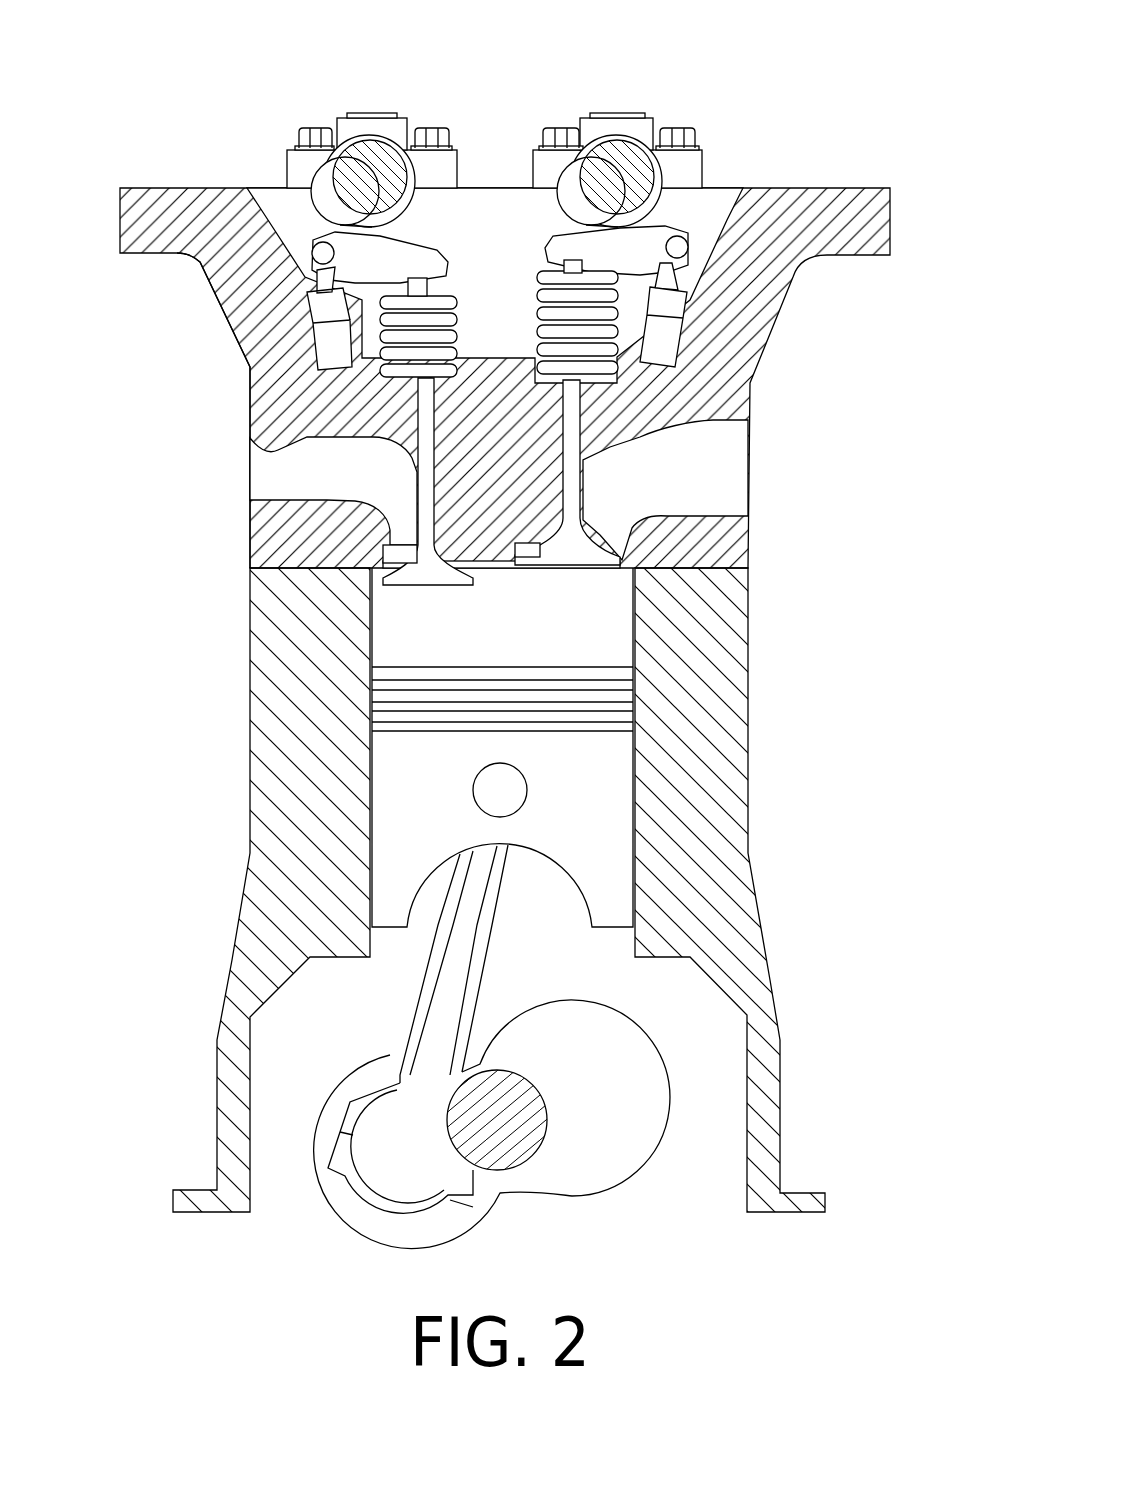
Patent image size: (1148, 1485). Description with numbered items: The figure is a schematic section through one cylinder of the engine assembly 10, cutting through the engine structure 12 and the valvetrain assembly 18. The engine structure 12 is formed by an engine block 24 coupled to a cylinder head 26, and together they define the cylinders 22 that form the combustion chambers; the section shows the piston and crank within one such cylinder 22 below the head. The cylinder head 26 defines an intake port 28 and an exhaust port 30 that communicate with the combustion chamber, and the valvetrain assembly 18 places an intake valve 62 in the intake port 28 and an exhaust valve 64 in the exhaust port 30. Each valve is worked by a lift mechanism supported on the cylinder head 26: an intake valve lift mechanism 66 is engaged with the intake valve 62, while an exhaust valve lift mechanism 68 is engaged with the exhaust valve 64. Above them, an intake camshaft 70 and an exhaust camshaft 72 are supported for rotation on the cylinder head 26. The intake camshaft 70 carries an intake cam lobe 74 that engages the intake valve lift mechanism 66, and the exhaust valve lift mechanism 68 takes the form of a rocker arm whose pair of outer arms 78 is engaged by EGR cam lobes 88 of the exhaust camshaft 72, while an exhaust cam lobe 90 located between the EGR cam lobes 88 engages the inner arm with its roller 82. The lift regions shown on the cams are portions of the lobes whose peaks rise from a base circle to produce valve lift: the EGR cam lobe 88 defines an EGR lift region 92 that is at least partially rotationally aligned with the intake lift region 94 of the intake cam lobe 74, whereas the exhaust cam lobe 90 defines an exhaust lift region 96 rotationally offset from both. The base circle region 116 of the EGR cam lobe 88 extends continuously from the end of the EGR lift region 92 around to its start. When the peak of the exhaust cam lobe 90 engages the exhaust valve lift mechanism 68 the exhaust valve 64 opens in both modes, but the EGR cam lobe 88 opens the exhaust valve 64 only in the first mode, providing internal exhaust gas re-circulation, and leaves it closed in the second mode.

The engine assembly 10 is at (163, 110).
The engine structure 12 is at (250, 568).
The valvetrain assembly 18 is at (697, 113).
The cylinders 22 is at (373, 648).
The engine block 24 is at (250, 672).
The cylinder head 26 is at (248, 338).
The intake ports 28 is at (713, 420).
The exhaust ports 30 is at (283, 447).
The intake valves 62 is at (550, 563).
The exhaust valves 64 is at (437, 580).
The intake valve lift mechanisms 66 is at (535, 288).
The exhaust valve lift mechanisms 68 is at (443, 268).
The intake camshaft 70 is at (590, 137).
The exhaust camshaft 72 is at (333, 127).
The intake cam lobes 74 is at (637, 136).
The outer arms 78 is at (425, 248).
The roller 82 is at (340, 155).
The EGR cam lobes 88 is at (318, 262).
The exhaust cam lobes 90 is at (427, 177).
The EGR lift region 92 is at (313, 207).
The intake lift region 94 is at (545, 193).
The exhaust lift regions 96 is at (378, 225).
The base circle region 116 is at (373, 140).